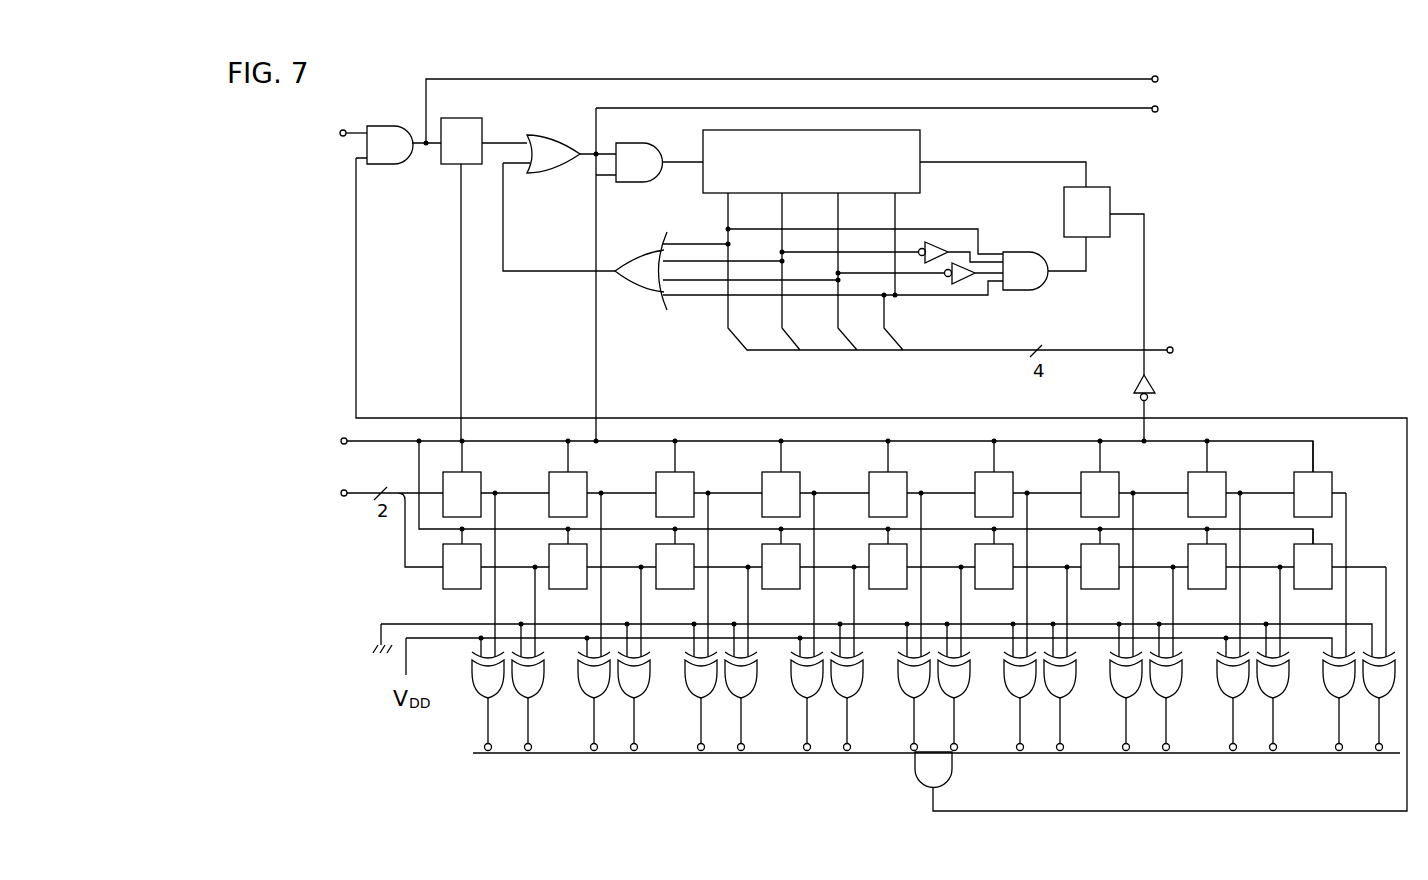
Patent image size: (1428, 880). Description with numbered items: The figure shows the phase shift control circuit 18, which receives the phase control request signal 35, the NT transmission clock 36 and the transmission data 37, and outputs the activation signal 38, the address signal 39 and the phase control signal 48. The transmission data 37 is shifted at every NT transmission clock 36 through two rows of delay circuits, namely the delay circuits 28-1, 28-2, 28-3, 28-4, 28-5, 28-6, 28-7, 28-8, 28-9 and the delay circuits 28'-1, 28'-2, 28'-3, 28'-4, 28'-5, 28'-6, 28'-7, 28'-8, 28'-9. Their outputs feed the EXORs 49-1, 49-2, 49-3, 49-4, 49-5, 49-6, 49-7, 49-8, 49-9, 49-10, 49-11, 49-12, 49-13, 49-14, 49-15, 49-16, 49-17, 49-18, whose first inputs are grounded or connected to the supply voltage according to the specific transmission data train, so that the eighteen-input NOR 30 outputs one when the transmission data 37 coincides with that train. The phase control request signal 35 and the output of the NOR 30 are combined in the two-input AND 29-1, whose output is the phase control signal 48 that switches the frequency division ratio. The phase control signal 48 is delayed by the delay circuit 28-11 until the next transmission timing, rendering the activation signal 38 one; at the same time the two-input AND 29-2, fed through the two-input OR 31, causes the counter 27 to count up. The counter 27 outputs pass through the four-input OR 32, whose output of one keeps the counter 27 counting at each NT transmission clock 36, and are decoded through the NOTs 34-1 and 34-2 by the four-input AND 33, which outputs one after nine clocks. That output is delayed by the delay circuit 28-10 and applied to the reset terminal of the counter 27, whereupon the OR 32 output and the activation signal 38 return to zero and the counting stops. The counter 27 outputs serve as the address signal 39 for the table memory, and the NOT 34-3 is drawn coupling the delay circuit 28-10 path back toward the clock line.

The phase shift control circuit 18 is at (424, 72).
The counter 27 is at (921, 136).
The delay circuit 28-1 is at (486, 458).
The delay circuit 28-2 is at (592, 458).
The delay circuit 28-3 is at (699, 458).
The delay circuit 28-4 is at (805, 458).
The delay circuit 28-5 is at (912, 458).
The delay circuit 28-6 is at (1018, 458).
The delay circuit 28-7 is at (1124, 458).
The delay circuit 28-8 is at (1231, 458).
The delay circuit 28-9 is at (1337, 458).
The delay circuit 28'-1 is at (491, 578).
The delay circuit 28'-2 is at (597, 578).
The delay circuit 28'-3 is at (704, 578).
The delay circuit 28'-4 is at (810, 578).
The delay circuit 28'-5 is at (917, 578).
The delay circuit 28'-6 is at (1023, 578).
The delay circuit 28'-7 is at (1129, 578).
The delay circuit 28'-8 is at (1236, 578).
The delay circuit 28'-9 is at (1335, 578).
The delay circuit 28-10 is at (1110, 196).
The delay circuit 28-11 is at (456, 118).
The 2-input AND 29-1 is at (395, 164).
The 2-input AND 29-2 is at (630, 143).
The 18-input NOR 30 is at (952, 770).
The 2-input OR 31 is at (548, 135).
The 4-input OR 32 is at (640, 290).
The 4-input AND 33 is at (1022, 252).
The NOT 34-1 is at (950, 222).
The NOT 34-2 is at (968, 284).
The NOT 34-3 is at (1152, 388).
The phase control request signal 35 is at (343, 137).
The NT transmission clock 36 is at (343, 437).
The transmission data 37 is at (344, 497).
The activation signal 38 is at (1159, 109).
The address signal 39 is at (1172, 346).
The phase control signal 48 is at (1159, 79).
The EXOR 49-1 is at (473, 674).
The EXOR 49-2 is at (542, 674).
The EXOR 49-3 is at (579, 674).
The EXOR 49-4 is at (648, 674).
The EXOR 49-5 is at (686, 674).
The EXOR 49-6 is at (755, 674).
The EXOR 49-7 is at (792, 674).
The EXOR 49-8 is at (861, 674).
The EXOR 49-9 is at (899, 674).
The EXOR 49-10 is at (968, 668).
The EXOR 49-11 is at (1005, 668).
The EXOR 49-12 is at (1074, 668).
The EXOR 49-13 is at (1111, 668).
The EXOR 49-14 is at (1180, 668).
The EXOR 49-15 is at (1218, 668).
The EXOR 49-16 is at (1287, 668).
The EXOR 49-17 is at (1324, 668).
The EXOR 49-18 is at (1393, 668).